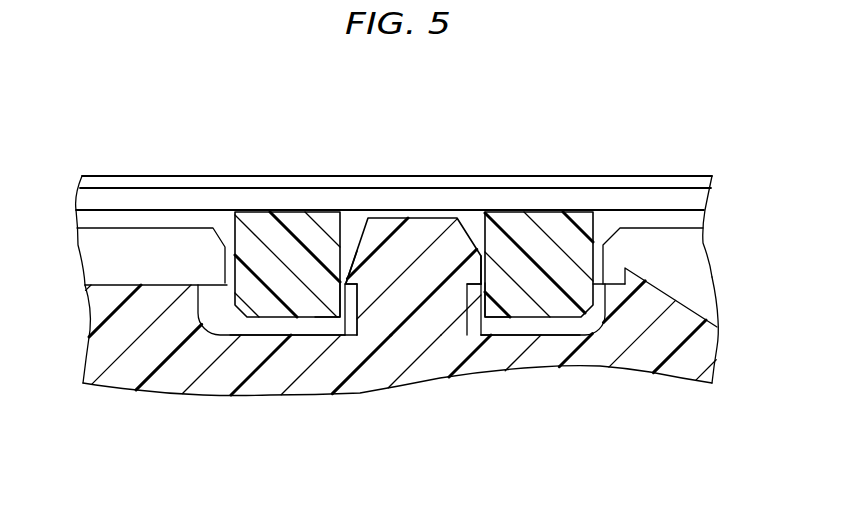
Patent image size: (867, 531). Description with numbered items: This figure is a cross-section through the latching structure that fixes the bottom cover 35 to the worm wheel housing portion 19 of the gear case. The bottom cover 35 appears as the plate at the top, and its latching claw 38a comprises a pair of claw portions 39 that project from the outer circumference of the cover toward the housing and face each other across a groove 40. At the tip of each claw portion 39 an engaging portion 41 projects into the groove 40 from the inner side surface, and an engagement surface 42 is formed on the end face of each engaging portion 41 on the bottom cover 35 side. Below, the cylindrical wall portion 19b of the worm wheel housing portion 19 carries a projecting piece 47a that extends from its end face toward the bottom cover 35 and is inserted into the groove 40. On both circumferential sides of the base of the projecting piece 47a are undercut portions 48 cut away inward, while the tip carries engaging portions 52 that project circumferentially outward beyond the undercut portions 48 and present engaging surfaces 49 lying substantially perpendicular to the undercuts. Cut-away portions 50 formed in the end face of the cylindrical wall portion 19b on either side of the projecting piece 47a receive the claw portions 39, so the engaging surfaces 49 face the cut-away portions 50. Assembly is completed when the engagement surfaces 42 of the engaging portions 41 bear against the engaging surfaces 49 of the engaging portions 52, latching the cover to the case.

The worm wheel housing portion 19 is at (400, 274).
The cylindrical wall portion 19b is at (640, 350).
The bottom cover 35 is at (394, 195).
The latching claw 38a is at (316, 190).
The claw portions 39 is at (414, 218).
The groove 40 is at (412, 217).
The engaging portions 41 is at (341, 291).
The engagement surfaces 42 is at (358, 283).
The projecting piece 47a is at (410, 289).
The undercut portions 48 is at (350, 302).
The engaging surfaces 49 is at (340, 326).
The cut-away portions 50 is at (268, 323).
The engaging portions 52 is at (358, 272).